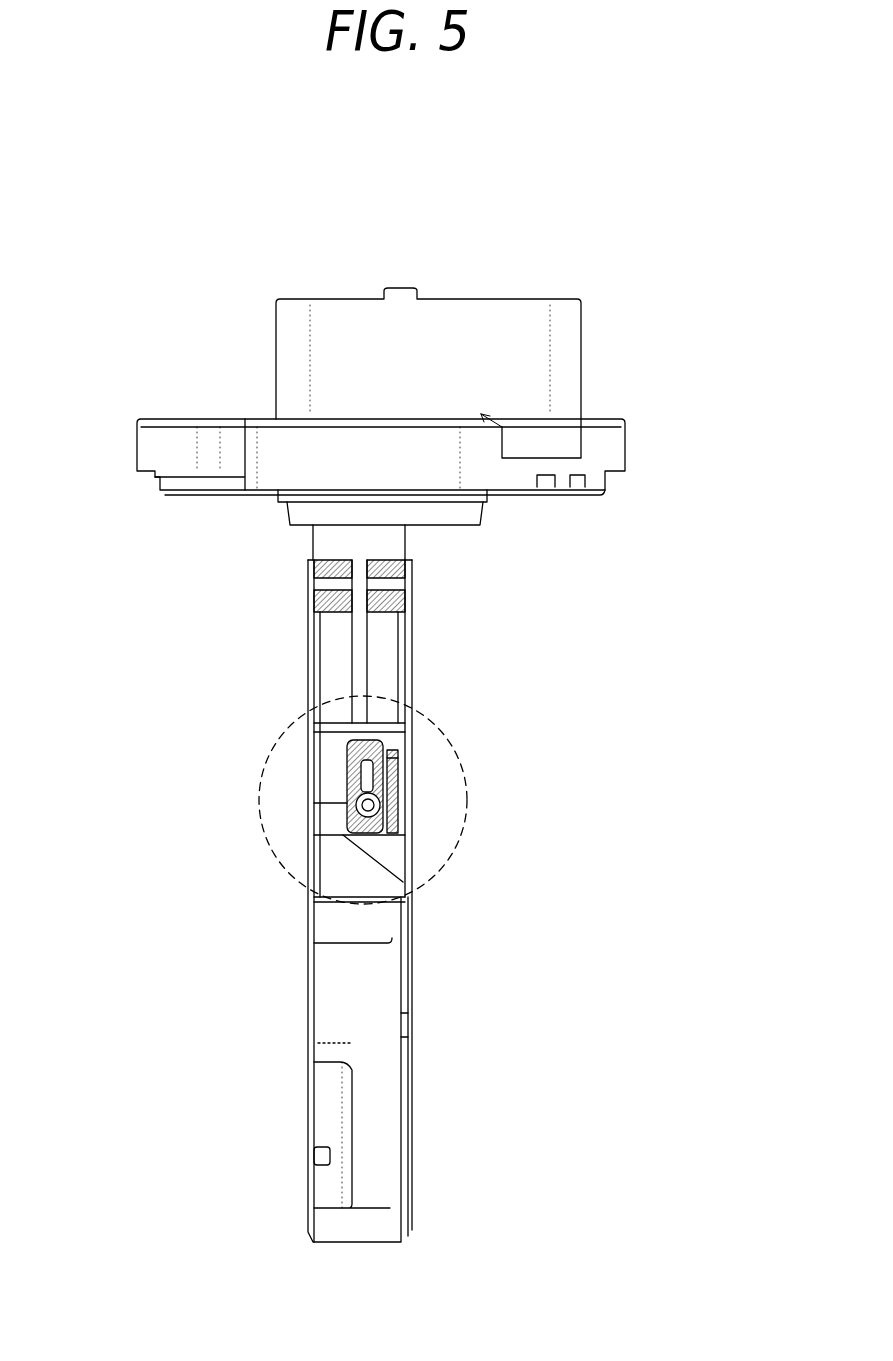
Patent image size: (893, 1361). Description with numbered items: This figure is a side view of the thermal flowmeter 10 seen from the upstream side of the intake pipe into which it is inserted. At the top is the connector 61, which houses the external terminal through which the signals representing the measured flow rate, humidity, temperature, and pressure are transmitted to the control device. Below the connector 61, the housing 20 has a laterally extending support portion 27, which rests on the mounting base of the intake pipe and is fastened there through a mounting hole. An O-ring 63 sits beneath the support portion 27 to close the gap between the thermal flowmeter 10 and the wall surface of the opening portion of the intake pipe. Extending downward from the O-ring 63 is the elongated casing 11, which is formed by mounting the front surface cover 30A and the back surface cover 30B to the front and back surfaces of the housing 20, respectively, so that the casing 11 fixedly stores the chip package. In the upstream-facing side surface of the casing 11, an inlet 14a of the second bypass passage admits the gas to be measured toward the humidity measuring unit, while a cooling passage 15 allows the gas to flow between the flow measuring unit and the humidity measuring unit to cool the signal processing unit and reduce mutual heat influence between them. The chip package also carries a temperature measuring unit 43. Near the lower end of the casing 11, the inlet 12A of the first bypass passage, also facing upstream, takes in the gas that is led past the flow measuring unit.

The thermal flowmeter 10 is at (129, 301).
The connector 61 is at (477, 363).
The support portion 27 is at (597, 453).
The O-ring 63 is at (280, 524).
The casing 11 is at (477, 645).
The housing 20 is at (328, 647).
The temperature measuring unit 43 is at (356, 796).
The inlet 14a is at (398, 757).
The cooling passage 15 is at (343, 835).
The front surface cover 30A is at (413, 960).
The back surface cover 30B is at (308, 957).
The inlet 12A is at (323, 1120).